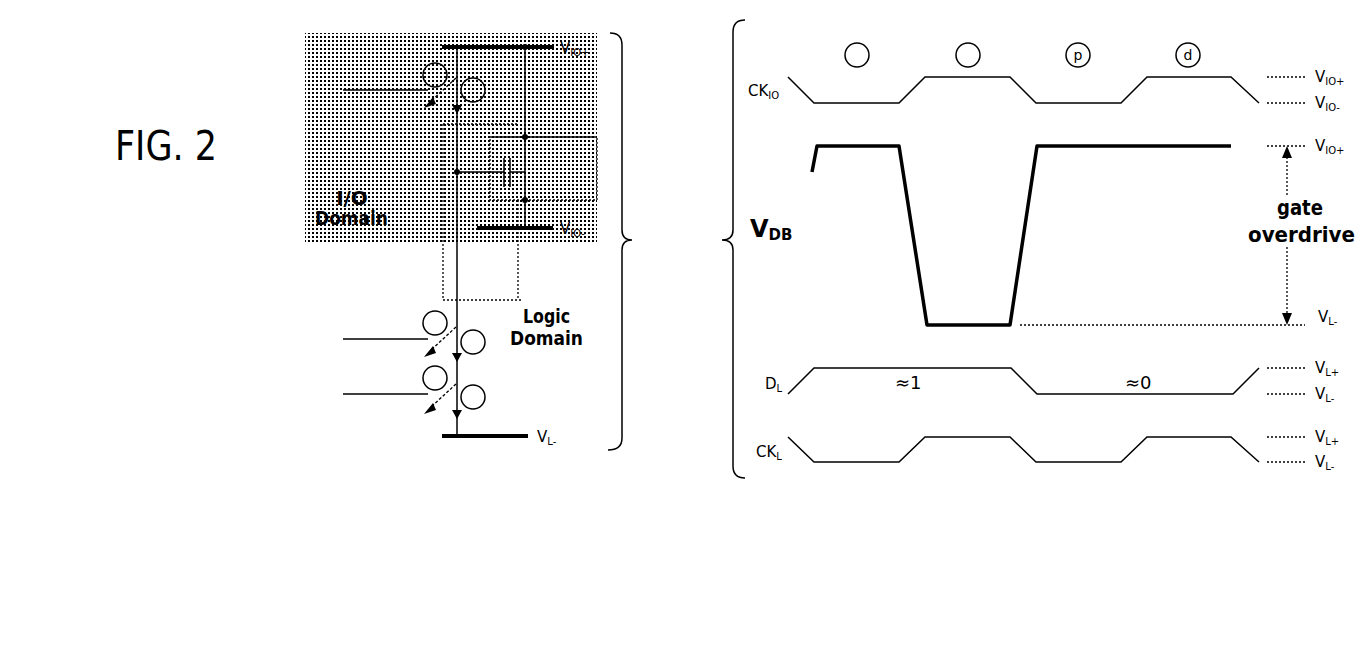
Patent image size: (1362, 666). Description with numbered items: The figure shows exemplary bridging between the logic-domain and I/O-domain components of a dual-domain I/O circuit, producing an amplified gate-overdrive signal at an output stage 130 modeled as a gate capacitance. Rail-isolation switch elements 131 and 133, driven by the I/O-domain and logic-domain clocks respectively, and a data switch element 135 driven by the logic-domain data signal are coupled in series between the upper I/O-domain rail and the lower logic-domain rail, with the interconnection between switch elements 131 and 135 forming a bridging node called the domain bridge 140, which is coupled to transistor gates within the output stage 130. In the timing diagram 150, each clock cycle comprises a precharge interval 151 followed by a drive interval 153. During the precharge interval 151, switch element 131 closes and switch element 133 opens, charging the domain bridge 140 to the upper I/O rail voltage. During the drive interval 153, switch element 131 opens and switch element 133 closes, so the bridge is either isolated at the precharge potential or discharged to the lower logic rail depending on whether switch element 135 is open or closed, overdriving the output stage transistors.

The output stage 130 is at (525, 136).
The rail-isolation switch element 131 is at (442, 108).
The rail-isolation switch element 133 is at (441, 407).
The data switch element 135 is at (462, 362).
The domain bridge 140 is at (443, 270).
The timing diagram 150 is at (714, 240).
The precharge interval 151 is at (858, 249).
The drive interval 153 is at (969, 249).